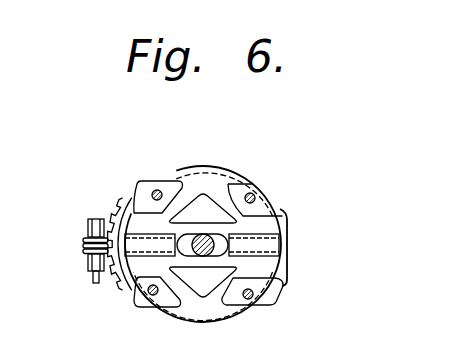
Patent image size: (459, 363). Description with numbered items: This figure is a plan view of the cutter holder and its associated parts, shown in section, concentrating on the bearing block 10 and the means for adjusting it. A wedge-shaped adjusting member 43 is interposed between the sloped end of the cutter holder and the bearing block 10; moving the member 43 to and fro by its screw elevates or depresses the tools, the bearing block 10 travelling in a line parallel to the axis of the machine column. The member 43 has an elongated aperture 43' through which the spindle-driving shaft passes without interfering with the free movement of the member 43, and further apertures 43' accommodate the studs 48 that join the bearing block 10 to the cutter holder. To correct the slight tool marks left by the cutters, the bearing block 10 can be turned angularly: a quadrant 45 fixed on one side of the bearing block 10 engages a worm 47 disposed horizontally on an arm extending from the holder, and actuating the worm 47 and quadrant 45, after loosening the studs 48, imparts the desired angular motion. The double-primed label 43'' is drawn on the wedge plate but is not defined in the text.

The bearing block 10 is at (150, 298).
The adjusting member 43 is at (206, 230).
The aperture 43' is at (202, 230).
The plate ears 43'' is at (232, 221).
The quadrant 45 is at (118, 279).
The worm 47 is at (97, 273).
The studs 48 is at (153, 193).